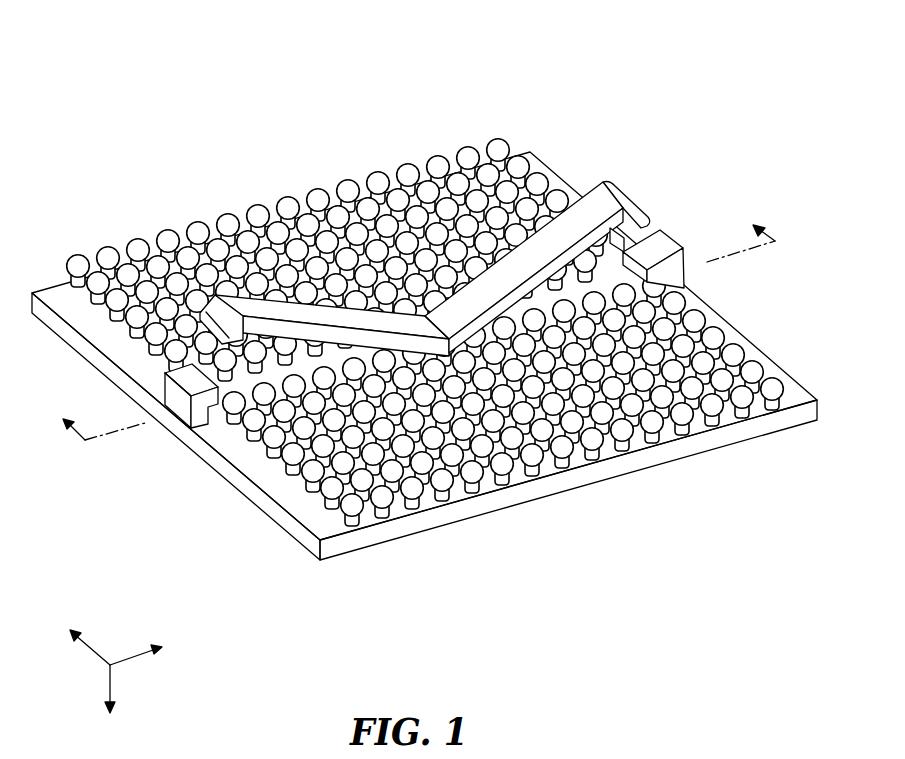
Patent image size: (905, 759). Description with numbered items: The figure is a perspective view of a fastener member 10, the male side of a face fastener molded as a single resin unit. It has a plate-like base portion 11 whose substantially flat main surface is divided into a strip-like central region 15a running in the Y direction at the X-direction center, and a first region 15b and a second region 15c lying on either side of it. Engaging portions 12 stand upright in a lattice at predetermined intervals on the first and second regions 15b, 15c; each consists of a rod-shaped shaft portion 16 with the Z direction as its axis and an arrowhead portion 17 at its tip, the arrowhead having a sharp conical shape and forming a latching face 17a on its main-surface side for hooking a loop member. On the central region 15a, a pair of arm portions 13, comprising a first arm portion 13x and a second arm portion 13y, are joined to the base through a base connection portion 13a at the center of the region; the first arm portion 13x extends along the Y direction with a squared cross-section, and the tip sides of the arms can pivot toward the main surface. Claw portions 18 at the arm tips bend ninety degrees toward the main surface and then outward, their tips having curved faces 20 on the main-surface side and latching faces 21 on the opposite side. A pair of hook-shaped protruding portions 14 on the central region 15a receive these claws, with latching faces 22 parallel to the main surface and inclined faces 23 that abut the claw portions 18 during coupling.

The fastener member 10 is at (165, 94).
The base portion 11 is at (212, 512).
The engaging portions 12 is at (452, 327).
The arm portions 13 is at (444, 321).
The first arm portion 13x is at (438, 247).
The second arm portion 13y is at (570, 224).
The base connection portion 13a is at (430, 322).
The hook-shaped protruding portions 14 is at (404, 364).
The central region 15a is at (583, 296).
The first region 15b is at (110, 287).
The second region 15c is at (478, 498).
The shaft portion 16 is at (509, 122).
The arrowhead portion 17 is at (497, 139).
The latching face 17a is at (468, 128).
The claw portions 18 is at (438, 241).
The curved faces 20 is at (652, 236).
The latching faces 21 is at (647, 204).
The latching faces 22 is at (215, 406).
The inclined faces 23 is at (203, 382).